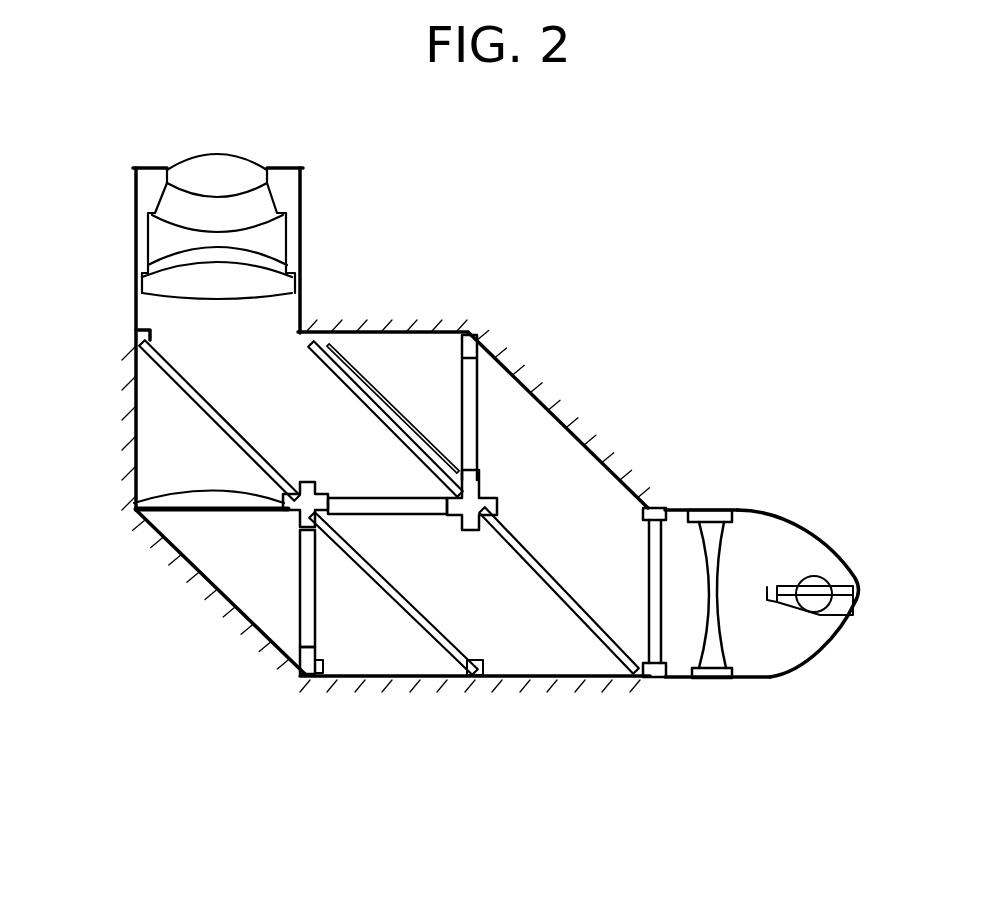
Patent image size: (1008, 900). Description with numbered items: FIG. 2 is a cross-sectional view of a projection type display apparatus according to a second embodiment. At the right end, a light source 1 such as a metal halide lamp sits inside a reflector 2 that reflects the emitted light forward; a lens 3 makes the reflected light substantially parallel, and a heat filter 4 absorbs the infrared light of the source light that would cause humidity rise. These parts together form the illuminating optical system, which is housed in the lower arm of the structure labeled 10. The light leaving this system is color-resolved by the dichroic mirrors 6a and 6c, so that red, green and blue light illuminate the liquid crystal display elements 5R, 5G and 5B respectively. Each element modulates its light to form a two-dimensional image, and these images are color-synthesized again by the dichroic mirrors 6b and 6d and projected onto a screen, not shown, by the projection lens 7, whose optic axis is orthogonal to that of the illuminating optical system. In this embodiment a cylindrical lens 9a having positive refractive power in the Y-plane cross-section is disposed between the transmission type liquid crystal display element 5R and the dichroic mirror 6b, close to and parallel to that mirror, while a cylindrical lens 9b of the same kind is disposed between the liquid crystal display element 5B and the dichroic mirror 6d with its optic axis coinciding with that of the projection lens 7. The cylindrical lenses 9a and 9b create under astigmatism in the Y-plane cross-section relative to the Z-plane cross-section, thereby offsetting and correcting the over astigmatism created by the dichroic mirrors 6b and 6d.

The light source 1 is at (822, 582).
The reflector 2 is at (812, 535).
The lens 3 is at (712, 663).
The heat filter 4 is at (654, 632).
The liquid crystal display element 5R is at (473, 418).
The liquid crystal display element 5G is at (385, 508).
The liquid crystal display element 5B is at (300, 612).
The dichroic mirror 6a is at (587, 627).
The dichroic mirror 6b is at (397, 412).
The dichroic mirror 6c is at (437, 645).
The dichroic mirror 6d is at (173, 392).
The projection lens 7 is at (277, 232).
The cylindrical lens 9a is at (365, 372).
The cylindrical lens 9b is at (158, 502).
The housing base 10 is at (308, 686).